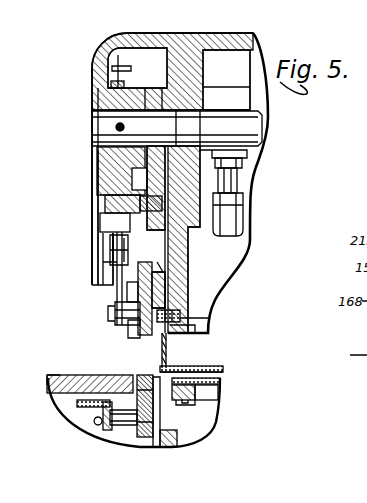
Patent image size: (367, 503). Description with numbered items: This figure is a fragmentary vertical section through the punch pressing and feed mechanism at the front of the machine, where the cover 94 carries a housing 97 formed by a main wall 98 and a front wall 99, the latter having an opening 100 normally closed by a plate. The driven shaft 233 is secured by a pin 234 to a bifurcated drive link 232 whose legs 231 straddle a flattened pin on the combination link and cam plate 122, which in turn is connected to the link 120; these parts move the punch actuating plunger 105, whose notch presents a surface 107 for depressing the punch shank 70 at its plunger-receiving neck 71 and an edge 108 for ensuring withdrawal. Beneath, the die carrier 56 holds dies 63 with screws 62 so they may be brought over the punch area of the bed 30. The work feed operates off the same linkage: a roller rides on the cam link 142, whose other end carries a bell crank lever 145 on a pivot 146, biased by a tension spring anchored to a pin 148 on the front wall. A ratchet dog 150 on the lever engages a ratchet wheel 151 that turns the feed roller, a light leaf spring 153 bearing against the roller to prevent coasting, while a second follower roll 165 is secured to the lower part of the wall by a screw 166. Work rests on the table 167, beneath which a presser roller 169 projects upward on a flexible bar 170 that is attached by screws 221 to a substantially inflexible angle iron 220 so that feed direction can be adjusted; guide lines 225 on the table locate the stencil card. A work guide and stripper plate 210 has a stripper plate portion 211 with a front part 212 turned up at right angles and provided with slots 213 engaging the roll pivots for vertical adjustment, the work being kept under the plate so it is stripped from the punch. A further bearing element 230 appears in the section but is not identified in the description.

The base or bed 30 is at (74, 401).
The die carrier 56 is at (208, 390).
The screws 62 is at (200, 406).
The dies 63 is at (222, 379).
The punch shank 70 is at (243, 218).
The plunger-receiving neck 71 is at (244, 188).
The cover 94 is at (255, 43).
The housing 97 is at (157, 29).
The main wall 98 is at (183, 67).
The front wall 99 is at (92, 80).
The opening 100 is at (98, 243).
The punch actuating plunger 105 is at (243, 81).
The surface 107 is at (250, 158).
The edge 108 is at (242, 171).
The link 120 is at (185, 250).
The combination link and cam plate 122 is at (163, 94).
The cam link 142 is at (130, 250).
The bell crank lever 145 is at (117, 298).
The pivot 146 is at (113, 262).
The pin 148 is at (135, 65).
The ratchet dog 150 is at (110, 315).
The ratchet wheel 151 is at (138, 340).
The leaf spring 153 is at (158, 280).
The follower roll 165 is at (128, 328).
The screw 166 is at (187, 317).
The table 167 is at (48, 376).
The presser roller 169 is at (165, 427).
The bar 170 is at (143, 428).
The work guide and stripper plate 210 is at (228, 368).
The stripper plate portion 211 is at (212, 367).
The front part 212 is at (170, 351).
The slots 213 is at (187, 300).
The angle iron 220 is at (97, 413).
The screw 221 is at (107, 432).
The guide lines 225 is at (122, 377).
The bearing 230 is at (105, 202).
The legs 231 is at (100, 221).
The drive link 232 is at (115, 153).
The driven shaft 233 is at (258, 129).
The pin 234 is at (115, 127).